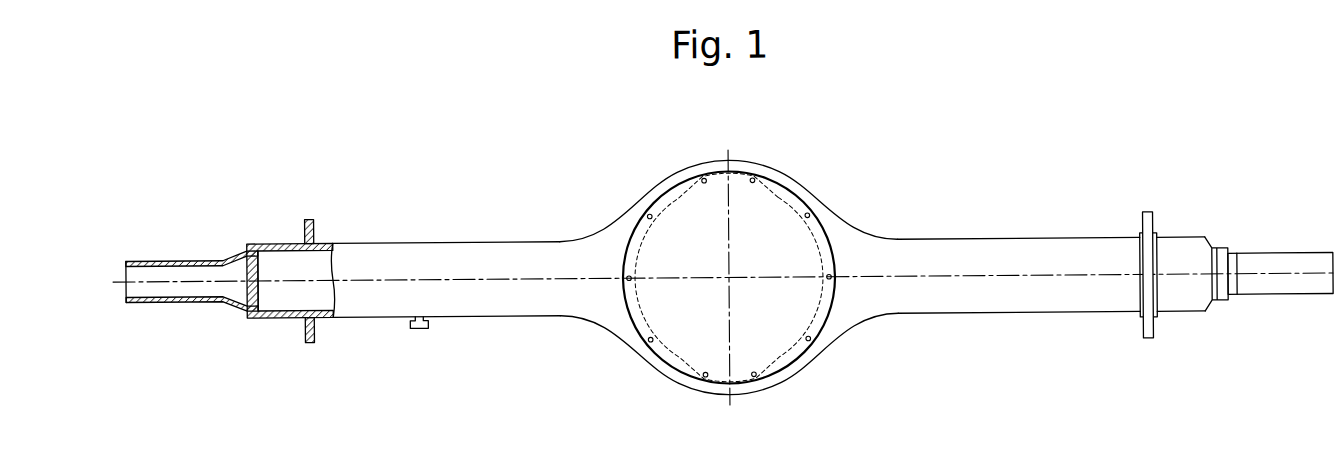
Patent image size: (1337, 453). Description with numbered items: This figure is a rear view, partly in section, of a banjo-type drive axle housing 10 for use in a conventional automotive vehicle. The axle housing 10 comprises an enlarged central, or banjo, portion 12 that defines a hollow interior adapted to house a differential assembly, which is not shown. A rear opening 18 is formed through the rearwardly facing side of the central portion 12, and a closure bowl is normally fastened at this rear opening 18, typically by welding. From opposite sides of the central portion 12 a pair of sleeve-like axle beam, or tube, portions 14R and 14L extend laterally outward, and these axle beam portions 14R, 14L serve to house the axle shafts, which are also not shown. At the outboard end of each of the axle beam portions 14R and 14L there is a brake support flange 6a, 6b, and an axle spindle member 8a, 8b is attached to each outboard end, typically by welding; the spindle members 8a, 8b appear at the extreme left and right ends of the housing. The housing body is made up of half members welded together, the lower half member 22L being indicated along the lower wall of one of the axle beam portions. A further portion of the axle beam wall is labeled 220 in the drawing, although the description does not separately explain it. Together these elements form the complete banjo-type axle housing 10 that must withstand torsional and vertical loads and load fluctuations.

The banjo-type axle housing 10 is at (842, 164).
The central portion 12 is at (688, 168).
The axle beam portion 14R is at (407, 240).
The axle beam portion 14L is at (1063, 240).
The axle tube wall portion 220 is at (965, 247).
The lower half member 22L is at (552, 309).
The rear opening 18 is at (663, 345).
The brake support flange 6a is at (308, 215).
The brake support flange 6b is at (1147, 215).
The axle spindle member 8a is at (178, 299).
The axle spindle member 8b is at (1290, 301).